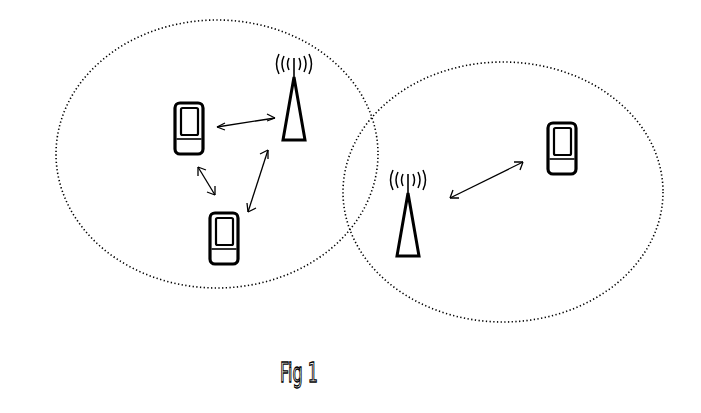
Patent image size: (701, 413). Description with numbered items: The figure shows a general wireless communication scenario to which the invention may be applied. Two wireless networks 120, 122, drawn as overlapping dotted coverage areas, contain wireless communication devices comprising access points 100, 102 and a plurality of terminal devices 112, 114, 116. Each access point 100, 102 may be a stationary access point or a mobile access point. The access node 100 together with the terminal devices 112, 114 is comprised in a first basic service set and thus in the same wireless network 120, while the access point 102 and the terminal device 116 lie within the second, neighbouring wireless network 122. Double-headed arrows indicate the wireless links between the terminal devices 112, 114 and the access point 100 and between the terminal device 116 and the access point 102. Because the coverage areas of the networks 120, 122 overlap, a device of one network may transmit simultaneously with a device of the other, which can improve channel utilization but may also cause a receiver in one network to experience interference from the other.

The access point 100 is at (299, 113).
The access point 102 is at (413, 226).
The terminal device 112 is at (210, 214).
The terminal device 114 is at (175, 104).
The terminal device 116 is at (548, 124).
The wireless network 120 is at (74, 91).
The wireless network 122 is at (435, 68).